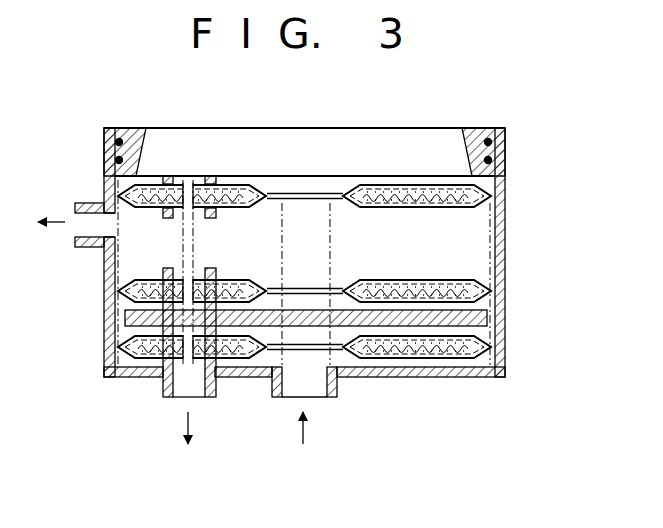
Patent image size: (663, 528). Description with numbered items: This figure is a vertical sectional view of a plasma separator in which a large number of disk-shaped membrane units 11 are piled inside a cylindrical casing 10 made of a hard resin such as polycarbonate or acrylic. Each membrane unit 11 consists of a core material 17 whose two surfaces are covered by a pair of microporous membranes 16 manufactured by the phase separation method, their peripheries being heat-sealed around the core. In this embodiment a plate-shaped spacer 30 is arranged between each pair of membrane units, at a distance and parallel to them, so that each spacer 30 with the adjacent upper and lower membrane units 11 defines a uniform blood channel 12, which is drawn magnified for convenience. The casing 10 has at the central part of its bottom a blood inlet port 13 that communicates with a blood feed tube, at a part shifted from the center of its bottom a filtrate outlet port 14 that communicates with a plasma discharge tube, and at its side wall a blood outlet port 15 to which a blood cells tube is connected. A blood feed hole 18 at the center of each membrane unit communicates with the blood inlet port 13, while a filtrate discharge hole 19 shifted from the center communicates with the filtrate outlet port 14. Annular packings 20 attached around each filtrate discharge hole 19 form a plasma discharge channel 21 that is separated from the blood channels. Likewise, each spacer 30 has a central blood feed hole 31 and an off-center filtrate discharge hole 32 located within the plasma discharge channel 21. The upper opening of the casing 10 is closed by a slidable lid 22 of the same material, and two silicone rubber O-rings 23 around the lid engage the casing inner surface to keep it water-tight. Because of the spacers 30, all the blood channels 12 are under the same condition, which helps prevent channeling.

The cylindrical casing 10 is at (505, 195).
The membrane unit 11 is at (424, 183).
The blood channel 12 is at (445, 302).
The blood inlet port 13 is at (318, 393).
The filtrate outlet port 14 is at (195, 392).
The blood outlet port 15 is at (77, 225).
The microporous membrane 16 is at (393, 183).
The core material 17 is at (369, 183).
The blood feed hole 18 is at (321, 199).
The filtrate discharge hole 19 is at (188, 183).
The annular packing 20 is at (219, 183).
The plasma discharge channel 21 is at (194, 240).
The lid 22 is at (292, 145).
The O-ring 23 is at (505, 160).
The plate-shaped spacer 30 is at (487, 318).
The blood feed hole 31 is at (288, 305).
The filtrate discharge hole 32 is at (188, 285).